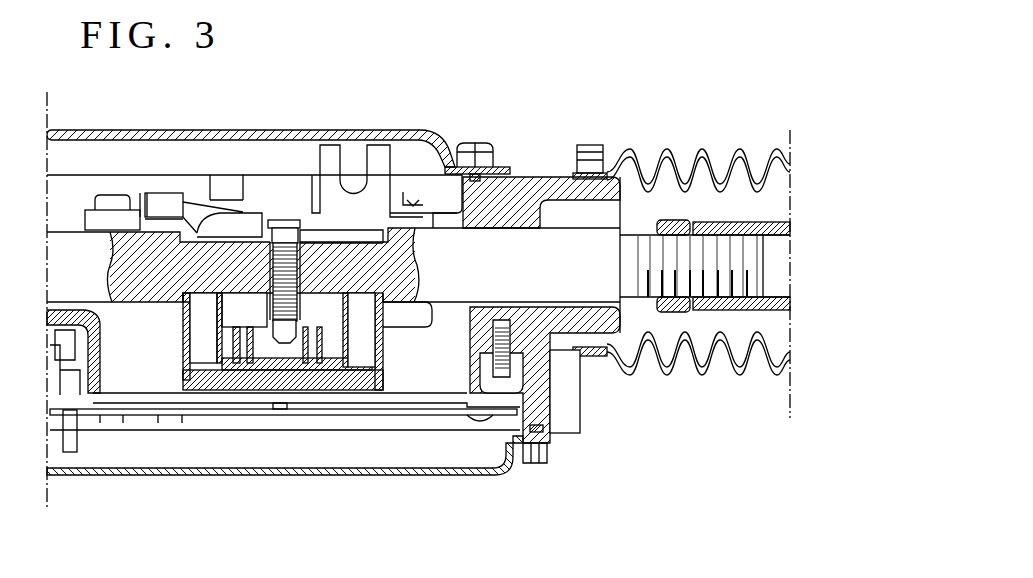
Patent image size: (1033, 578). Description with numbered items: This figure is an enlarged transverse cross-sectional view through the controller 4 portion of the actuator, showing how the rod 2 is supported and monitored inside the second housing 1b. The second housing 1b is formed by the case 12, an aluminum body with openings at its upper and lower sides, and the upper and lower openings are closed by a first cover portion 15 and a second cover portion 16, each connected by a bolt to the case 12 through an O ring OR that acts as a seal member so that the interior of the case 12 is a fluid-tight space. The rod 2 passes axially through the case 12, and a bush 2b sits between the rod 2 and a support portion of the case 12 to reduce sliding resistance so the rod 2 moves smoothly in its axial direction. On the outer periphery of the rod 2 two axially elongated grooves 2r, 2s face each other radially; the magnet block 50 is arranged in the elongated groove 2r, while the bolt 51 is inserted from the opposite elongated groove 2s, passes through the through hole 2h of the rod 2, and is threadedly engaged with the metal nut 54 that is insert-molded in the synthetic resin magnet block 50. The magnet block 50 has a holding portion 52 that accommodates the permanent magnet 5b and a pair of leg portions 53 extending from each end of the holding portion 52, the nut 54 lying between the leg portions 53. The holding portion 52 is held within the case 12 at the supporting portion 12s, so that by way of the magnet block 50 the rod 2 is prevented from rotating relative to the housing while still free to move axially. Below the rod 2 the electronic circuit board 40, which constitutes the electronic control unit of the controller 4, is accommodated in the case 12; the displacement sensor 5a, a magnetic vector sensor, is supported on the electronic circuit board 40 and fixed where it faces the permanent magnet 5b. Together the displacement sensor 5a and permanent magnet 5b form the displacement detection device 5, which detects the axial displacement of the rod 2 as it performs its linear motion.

The second housing 1b is at (143, 128).
The elongated groove 2s is at (184, 236).
The through hole 2h is at (273, 248).
The bolt 51 is at (284, 222).
The controller 4 is at (408, 150).
The first cover portion 15 is at (434, 140).
The O ring OR is at (480, 176).
The rod 2 is at (518, 245).
The case 12 is at (557, 184).
The bush 2b is at (545, 226).
The supporting portion 12s is at (551, 397).
The leg portion 53 is at (186, 340).
The elongated groove 2r is at (218, 378).
The permanent magnet 5b is at (222, 394).
The displacement detection device 5 is at (246, 420).
The displacement sensor 5a is at (280, 410).
The nut 54 is at (298, 372).
The electronic circuit board 40 is at (375, 408).
The holding portion 52 is at (390, 368).
The magnet block 50 is at (385, 345).
The second cover portion 16 is at (490, 472).